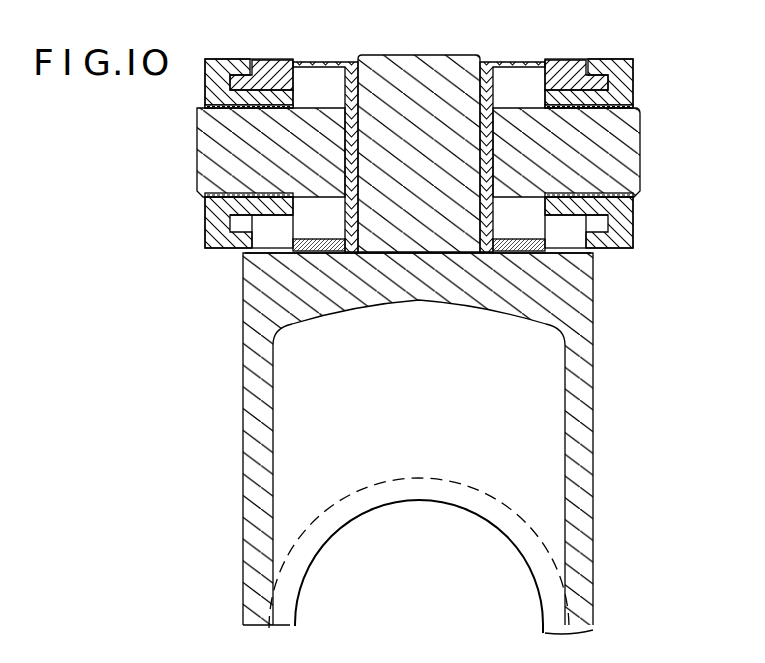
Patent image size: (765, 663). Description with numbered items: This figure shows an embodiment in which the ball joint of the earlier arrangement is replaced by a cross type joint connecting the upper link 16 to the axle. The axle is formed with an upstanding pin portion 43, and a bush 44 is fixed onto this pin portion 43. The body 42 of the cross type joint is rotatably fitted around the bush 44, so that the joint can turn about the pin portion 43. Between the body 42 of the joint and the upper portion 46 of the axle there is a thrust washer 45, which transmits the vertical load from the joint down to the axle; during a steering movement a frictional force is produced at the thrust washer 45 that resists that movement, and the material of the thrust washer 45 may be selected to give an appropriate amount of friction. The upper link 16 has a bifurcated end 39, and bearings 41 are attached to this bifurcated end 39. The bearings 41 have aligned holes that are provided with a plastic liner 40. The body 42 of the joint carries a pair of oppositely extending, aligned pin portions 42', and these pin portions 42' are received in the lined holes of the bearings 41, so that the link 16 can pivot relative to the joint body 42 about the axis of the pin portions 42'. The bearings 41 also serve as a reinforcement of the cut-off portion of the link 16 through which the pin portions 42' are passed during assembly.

The upper link 16 is at (278, 54).
The pin portion 43 is at (413, 65).
The bush 44 is at (490, 65).
The body 42 is at (566, 55).
The bifurcated end 39 is at (573, 68).
The bearings 41 is at (627, 58).
The plastic liner 40 is at (632, 122).
The pin portions 42' is at (620, 210).
The upper portion of the axle 46 is at (572, 273).
The thrust washer 45 is at (327, 252).